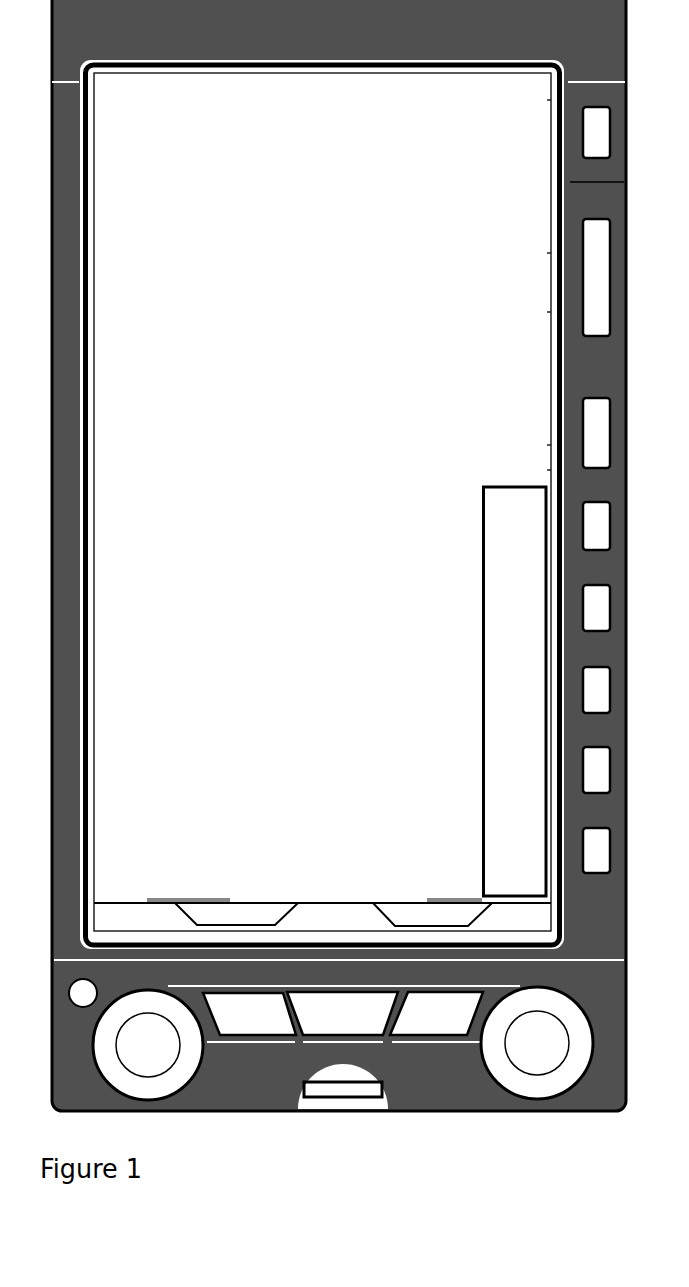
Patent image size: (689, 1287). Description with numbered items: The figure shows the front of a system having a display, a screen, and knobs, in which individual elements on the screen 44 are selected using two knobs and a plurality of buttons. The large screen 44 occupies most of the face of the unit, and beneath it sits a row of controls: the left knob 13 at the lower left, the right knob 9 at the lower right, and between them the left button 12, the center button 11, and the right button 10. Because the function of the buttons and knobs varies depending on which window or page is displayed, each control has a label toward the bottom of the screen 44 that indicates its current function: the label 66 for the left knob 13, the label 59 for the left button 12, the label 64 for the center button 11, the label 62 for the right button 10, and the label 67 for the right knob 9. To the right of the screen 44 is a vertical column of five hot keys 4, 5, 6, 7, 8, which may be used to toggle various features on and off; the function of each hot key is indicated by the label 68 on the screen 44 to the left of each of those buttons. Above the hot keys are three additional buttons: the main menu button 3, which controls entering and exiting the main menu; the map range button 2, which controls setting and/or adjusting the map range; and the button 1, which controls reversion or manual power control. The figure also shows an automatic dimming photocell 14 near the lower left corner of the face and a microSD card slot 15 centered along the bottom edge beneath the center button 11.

The reversion or manual power control button 1 is at (596, 132).
The map range button 2 is at (596, 277).
The main menu button 3 is at (596, 433).
The hot key 4 is at (596, 526).
The hot key 5 is at (596, 608).
The hot key 6 is at (596, 690).
The hot key 7 is at (596, 770).
The hot key 8 is at (596, 850).
The right knob 9 is at (537, 1043).
The right button 10 is at (436, 1013).
The center button 11 is at (342, 1013).
The left button 12 is at (249, 1014).
The left knob 13 is at (148, 1045).
The automatic dimming photocell 14 is at (83, 993).
The microSD card slot 15 is at (356, 1079).
The screen 44 is at (322, 504).
The left button label 59 is at (236, 917).
The right button label 62 is at (432, 917).
The center button label 64 is at (335, 917).
The left knob label 66 is at (134, 917).
The right knob label 67 is at (521, 917).
The hot key label 68 is at (515, 691).